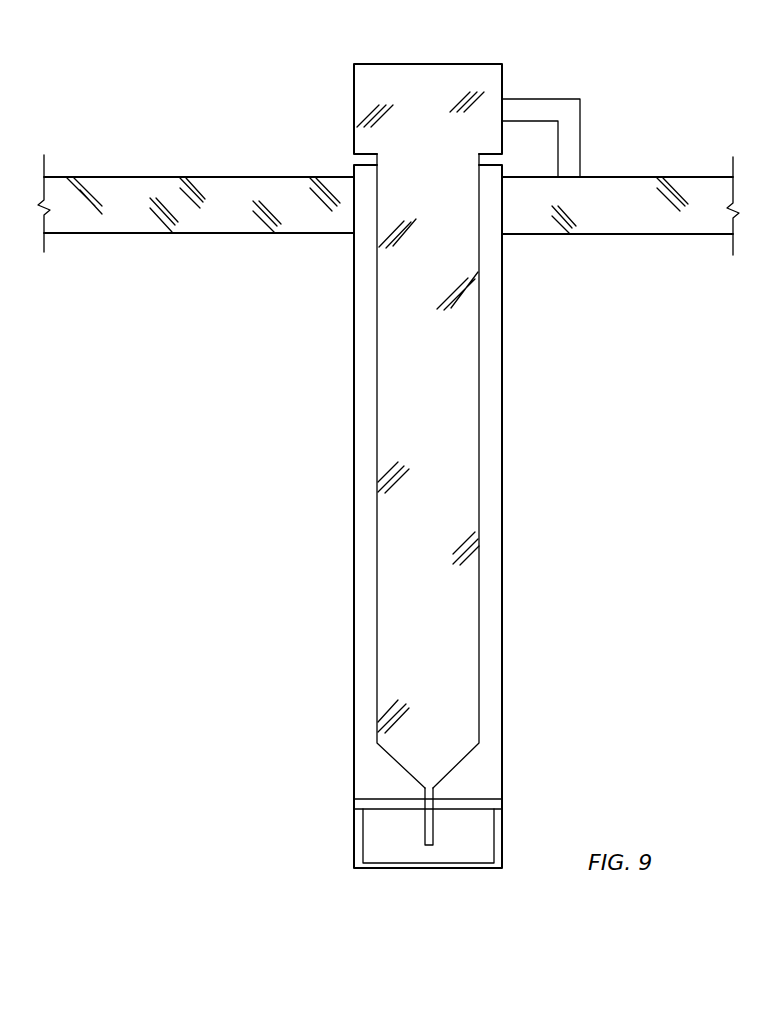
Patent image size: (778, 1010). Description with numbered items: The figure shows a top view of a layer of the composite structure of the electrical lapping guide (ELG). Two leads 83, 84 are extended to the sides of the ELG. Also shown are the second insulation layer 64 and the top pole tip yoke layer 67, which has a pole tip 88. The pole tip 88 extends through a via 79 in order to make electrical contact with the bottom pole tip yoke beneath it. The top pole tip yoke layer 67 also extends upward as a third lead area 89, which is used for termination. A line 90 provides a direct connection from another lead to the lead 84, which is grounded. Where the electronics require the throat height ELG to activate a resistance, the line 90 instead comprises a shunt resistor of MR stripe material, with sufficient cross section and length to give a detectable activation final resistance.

The third lead area 89 is at (430, 74).
The line 90 is at (547, 106).
The lead 83 is at (229, 183).
The lead 84 is at (627, 185).
The second insulation layer 64 is at (493, 767).
The top pole tip yoke layer 67 is at (463, 455).
The pole tip 88 is at (428, 832).
The via 79 is at (363, 828).